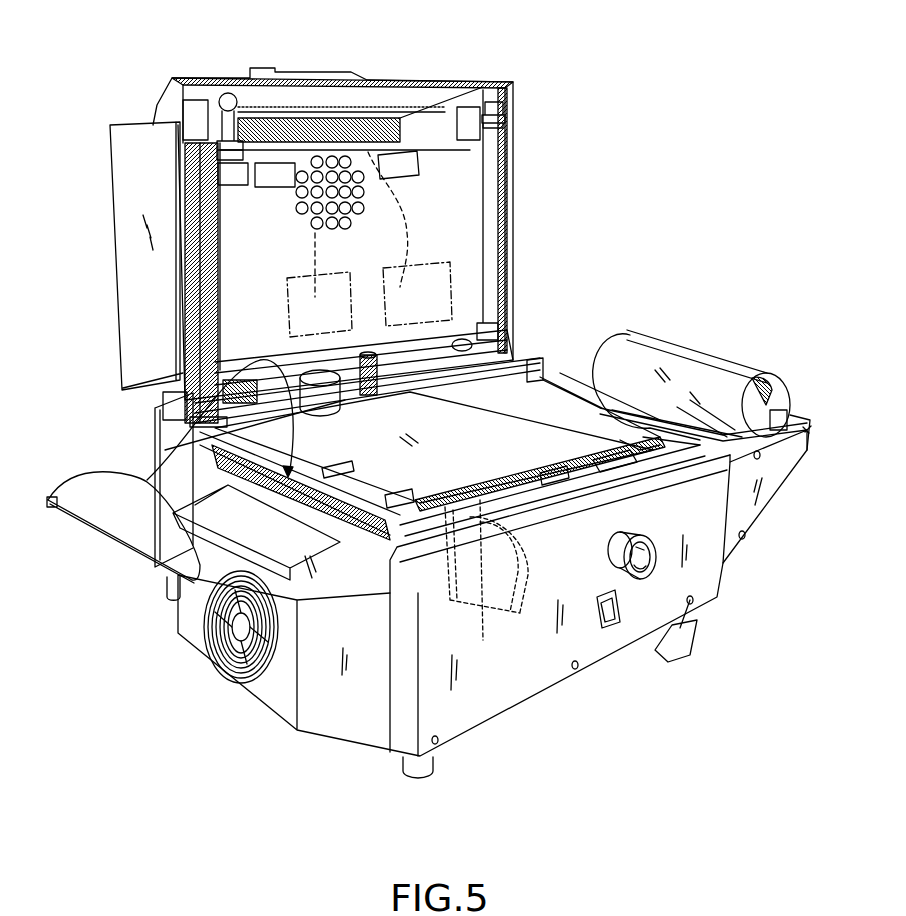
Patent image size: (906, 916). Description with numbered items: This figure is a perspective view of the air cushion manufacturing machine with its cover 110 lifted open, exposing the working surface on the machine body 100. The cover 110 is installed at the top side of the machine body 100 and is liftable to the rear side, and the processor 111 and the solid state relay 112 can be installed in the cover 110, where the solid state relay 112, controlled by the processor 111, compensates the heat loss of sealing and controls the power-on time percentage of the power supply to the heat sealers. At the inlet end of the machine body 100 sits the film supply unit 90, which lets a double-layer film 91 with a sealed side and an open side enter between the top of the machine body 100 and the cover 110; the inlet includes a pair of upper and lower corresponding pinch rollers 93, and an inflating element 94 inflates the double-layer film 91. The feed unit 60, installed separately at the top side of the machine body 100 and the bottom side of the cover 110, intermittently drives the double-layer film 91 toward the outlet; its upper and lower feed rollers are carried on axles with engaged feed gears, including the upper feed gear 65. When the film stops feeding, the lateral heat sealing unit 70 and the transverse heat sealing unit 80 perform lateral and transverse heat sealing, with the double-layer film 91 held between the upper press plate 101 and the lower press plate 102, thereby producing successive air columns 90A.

The machine body 100 is at (503, 690).
The upper press plate 101 is at (267, 210).
The lower press plate 102 is at (448, 605).
The cover 110 is at (490, 82).
The processor 111 is at (287, 160).
The solid state relay 112 is at (368, 152).
The pinch rollers 93 is at (498, 163).
The lateral heat sealing unit 70 is at (507, 471).
The transverse heat sealing unit 80 is at (300, 385).
The upper feed gear 65 is at (157, 408).
The feed unit 60 is at (165, 450).
The film supply unit 90 is at (733, 380).
The air columns 90A is at (110, 517).
The double-layer film 91 is at (600, 330).
The inflating element 94 is at (643, 437).